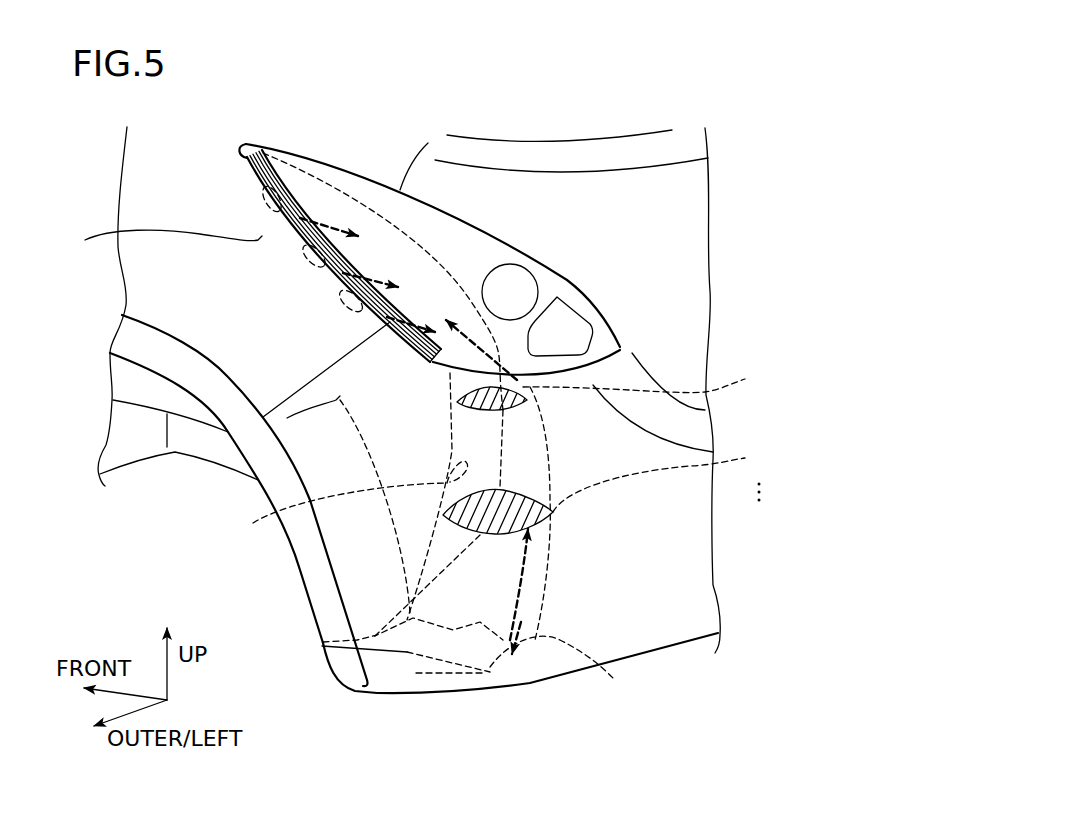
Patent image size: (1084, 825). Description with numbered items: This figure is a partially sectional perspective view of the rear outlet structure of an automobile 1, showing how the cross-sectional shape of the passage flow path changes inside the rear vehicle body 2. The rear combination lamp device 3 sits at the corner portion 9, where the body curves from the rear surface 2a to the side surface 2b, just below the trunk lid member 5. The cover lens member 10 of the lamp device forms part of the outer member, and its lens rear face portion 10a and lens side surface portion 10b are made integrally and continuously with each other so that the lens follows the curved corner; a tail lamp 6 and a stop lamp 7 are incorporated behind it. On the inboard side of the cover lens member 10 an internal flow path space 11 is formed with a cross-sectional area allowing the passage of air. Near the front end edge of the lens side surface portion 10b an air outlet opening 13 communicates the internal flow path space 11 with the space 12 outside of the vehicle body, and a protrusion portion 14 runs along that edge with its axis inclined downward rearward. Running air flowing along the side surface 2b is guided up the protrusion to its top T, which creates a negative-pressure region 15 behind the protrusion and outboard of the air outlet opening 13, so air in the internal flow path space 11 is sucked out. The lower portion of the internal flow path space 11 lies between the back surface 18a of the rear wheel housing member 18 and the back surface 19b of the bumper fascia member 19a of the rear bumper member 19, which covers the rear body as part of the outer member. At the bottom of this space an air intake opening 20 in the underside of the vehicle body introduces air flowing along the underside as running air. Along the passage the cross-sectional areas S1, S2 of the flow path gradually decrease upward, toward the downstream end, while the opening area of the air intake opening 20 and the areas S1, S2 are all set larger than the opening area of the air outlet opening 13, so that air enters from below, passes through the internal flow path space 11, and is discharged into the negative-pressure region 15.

The automobile 1 is at (726, 220).
The rear vehicle body 2 is at (296, 603).
The rear surface 2a is at (683, 200).
The side surface 2b is at (160, 306).
The rear combination lamp device 3 is at (567, 282).
The trunk lid member 5 is at (687, 175).
The tail lamp 6 is at (577, 320).
The stop lamp 7 is at (518, 280).
The corner portion 9 is at (409, 142).
The cover lens member 10 is at (479, 236).
The lens rear face portion 10a is at (562, 334).
The lens side surface portion 10b is at (284, 174).
The internal flow path space 11 is at (347, 498).
The space outside of the vehicle body 12 is at (360, 398).
The air outlet opening 13 is at (342, 262).
The protrusion portion 14 is at (330, 288).
The negative-pressure region 15 is at (408, 302).
The rear wheel housing member 18 is at (294, 541).
The back surface of rear wheel housing member 18a is at (410, 617).
The rear bumper member 19 is at (560, 670).
The bumper fascia member 19a is at (447, 683).
The back surface of bumper fascia member 19b is at (493, 668).
The air intake opening 20 is at (600, 670).
The cross-sectional area S1 is at (663, 479).
The cross-sectional area S2 is at (648, 383).
The top of protrusion portion T is at (226, 440).